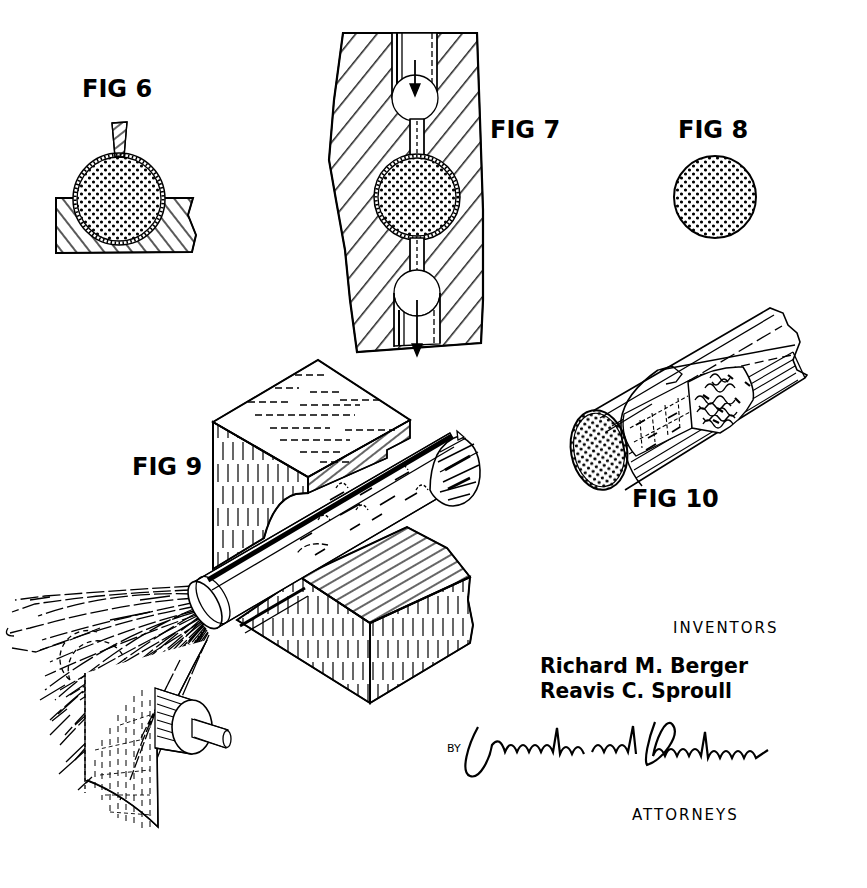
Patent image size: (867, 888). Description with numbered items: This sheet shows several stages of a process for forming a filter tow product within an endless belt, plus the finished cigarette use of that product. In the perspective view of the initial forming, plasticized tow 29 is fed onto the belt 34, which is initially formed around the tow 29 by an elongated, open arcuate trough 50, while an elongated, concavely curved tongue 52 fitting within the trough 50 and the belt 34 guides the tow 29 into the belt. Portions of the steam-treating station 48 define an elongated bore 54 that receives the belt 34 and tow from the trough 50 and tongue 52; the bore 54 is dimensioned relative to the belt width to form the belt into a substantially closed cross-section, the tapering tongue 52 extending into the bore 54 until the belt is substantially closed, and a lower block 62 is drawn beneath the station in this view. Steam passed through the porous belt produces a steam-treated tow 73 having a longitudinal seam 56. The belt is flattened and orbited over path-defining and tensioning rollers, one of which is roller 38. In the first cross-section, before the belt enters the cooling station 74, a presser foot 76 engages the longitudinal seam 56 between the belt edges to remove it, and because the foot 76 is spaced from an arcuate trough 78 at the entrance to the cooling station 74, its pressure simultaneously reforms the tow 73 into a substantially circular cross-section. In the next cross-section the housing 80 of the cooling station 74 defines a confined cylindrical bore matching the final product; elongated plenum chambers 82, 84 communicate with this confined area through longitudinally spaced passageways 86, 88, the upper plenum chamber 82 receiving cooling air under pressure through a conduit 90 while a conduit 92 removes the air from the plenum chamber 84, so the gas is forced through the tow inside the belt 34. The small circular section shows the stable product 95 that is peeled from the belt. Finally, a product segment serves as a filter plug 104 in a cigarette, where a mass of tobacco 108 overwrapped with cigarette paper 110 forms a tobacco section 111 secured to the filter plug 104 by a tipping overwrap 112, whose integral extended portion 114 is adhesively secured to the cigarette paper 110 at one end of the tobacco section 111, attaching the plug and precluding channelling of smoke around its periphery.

In FIG. 9, the plasticized tow 29 is at (481, 460).
In FIG. 6, the belt 34 is at (153, 170).
In FIG. 7, the belt 34 is at (449, 212).
In FIG. 9, the belt 34 is at (160, 790).
In FIG. 9, the tensioning roller 38 is at (214, 727).
In FIG. 9, the steam-treating station 48 is at (244, 420).
In FIG. 9, the arcuate trough 50 is at (285, 597).
In FIG. 9, the tongue 52 is at (266, 541).
In FIG. 9, the bore 54 is at (304, 580).
In FIG. 9, the longitudinal seam 56 is at (463, 434).
In FIG. 9, the lower clamping block 62 is at (472, 580).
In FIG. 6, the steam-treated tow 73 is at (95, 185).
In FIG. 7, the cooling station 74 is at (488, 210).
In FIG. 6, the presser foot 76 is at (128, 134).
In FIG. 6, the arcuate trough 78 is at (106, 242).
In FIG. 7, the housing 80 is at (477, 70).
In FIG. 7, the upper plenum chamber 82 is at (398, 86).
In FIG. 7, the lower plenum chamber 84 is at (395, 284).
In FIG. 7, the passageways 86 is at (423, 137).
In FIG. 7, the passageways 88 is at (410, 256).
In FIG. 7, the conduit 90 is at (440, 80).
In FIG. 7, the conduit 92 is at (401, 318).
In FIG. 7, the product 95 is at (393, 172).
In FIG. 8, the product 95 is at (730, 162).
In FIG. 10, the filter plug 104 is at (640, 448).
In FIG. 10, the mass of tobacco 108 is at (745, 416).
In FIG. 10, the cigarette paper 110 is at (725, 340).
In FIG. 10, the tobacco section 111 is at (772, 336).
In FIG. 10, the tipping overwrap 112 is at (620, 393).
In FIG. 10, the extended portion 114 is at (666, 367).